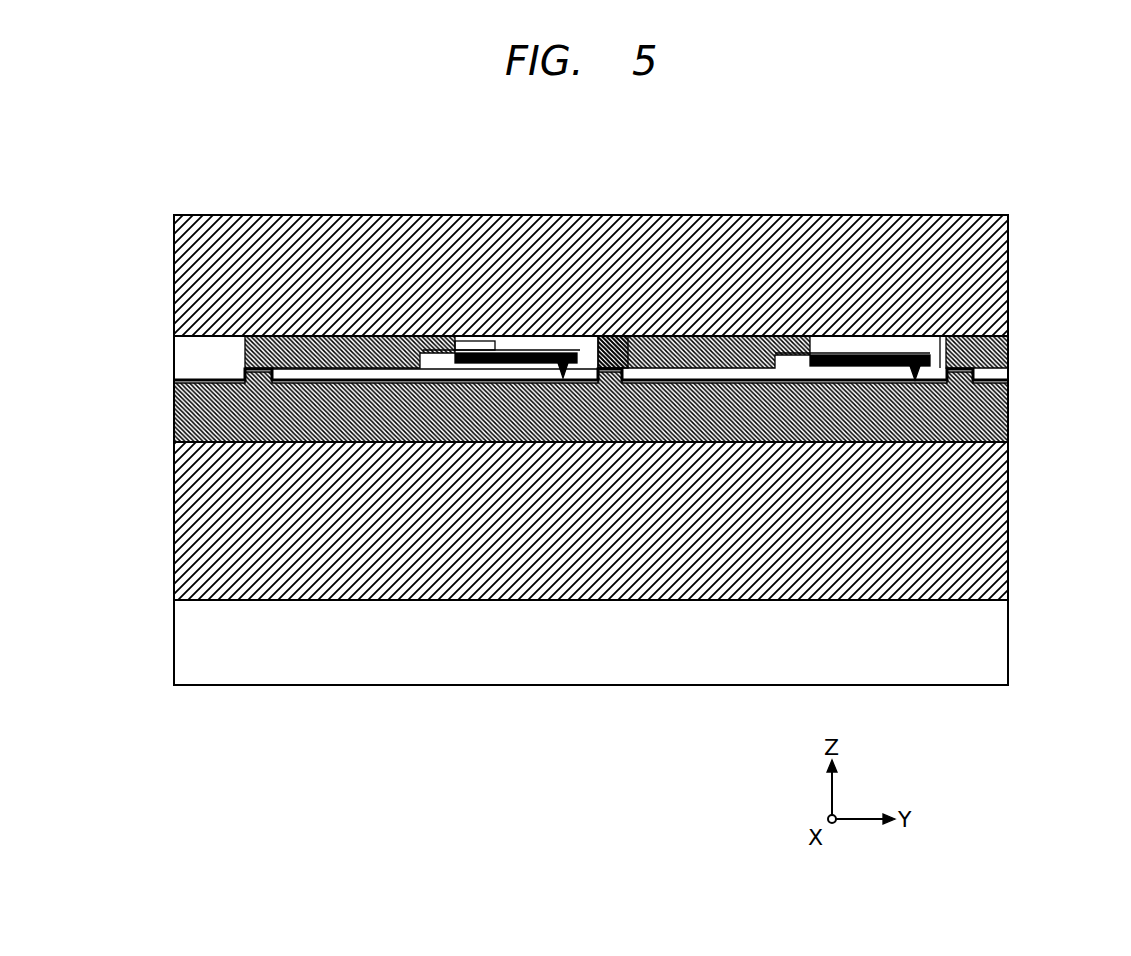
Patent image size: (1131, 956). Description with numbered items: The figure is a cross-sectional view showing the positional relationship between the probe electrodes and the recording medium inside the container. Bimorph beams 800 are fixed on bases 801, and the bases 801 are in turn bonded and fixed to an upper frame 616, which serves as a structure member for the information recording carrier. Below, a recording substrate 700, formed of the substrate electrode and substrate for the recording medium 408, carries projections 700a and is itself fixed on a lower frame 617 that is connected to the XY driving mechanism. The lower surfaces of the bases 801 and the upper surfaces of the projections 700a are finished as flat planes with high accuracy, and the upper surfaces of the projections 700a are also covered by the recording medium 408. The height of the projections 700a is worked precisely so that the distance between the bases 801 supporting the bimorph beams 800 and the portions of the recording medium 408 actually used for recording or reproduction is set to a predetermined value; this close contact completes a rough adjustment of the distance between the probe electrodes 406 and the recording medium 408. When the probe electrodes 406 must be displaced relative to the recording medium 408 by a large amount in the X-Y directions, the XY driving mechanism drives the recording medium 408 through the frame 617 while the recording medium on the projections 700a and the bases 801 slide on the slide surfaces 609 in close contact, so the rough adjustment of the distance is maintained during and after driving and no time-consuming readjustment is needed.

The frame 616 is at (985, 302).
The frame 617 is at (978, 498).
The recording substrate 700 is at (985, 406).
The projections 700a is at (243, 372).
The probe electrodes 406 is at (920, 374).
The recording medium 408 is at (369, 381).
The slide surfaces 609 is at (607, 365).
The bimorph beams 800 is at (493, 350).
The bases 801 is at (745, 352).